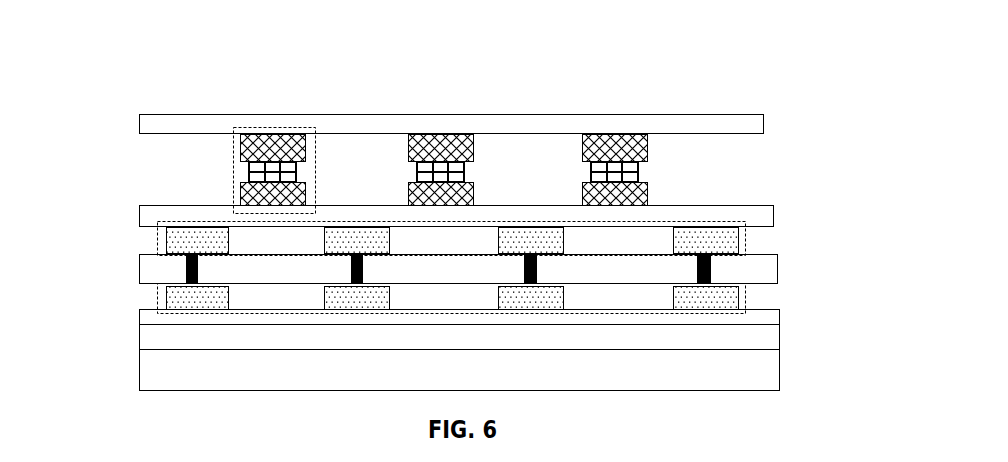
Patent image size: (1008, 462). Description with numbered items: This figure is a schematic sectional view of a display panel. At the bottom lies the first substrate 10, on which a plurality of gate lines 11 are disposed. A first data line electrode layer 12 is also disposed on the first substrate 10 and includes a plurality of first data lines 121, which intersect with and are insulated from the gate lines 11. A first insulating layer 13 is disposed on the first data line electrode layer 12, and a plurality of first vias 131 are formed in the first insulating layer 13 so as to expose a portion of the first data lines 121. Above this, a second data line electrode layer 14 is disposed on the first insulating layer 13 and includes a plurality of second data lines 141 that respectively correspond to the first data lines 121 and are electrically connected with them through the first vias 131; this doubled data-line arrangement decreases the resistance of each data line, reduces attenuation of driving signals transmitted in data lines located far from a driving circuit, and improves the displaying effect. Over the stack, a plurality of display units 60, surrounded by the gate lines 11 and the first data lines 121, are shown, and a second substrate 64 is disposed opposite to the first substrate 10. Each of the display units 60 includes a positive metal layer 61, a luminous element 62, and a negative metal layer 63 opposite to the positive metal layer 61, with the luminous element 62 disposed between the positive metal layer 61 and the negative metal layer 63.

The first substrate 10 is at (768, 368).
The gate lines 11 is at (765, 333).
The first data line electrode layer 12 is at (745, 297).
The first data lines 121 is at (183, 297).
The first insulating layer 13 is at (773, 266).
The first vias 131 is at (712, 270).
The second data line electrode layer 14 is at (745, 245).
The second data lines 141 is at (193, 240).
The display units 60 is at (273, 128).
The positive metal layer 61 is at (647, 194).
The luminous element 62 is at (640, 170).
The negative metal layer 63 is at (647, 145).
The second substrate 64 is at (757, 123).